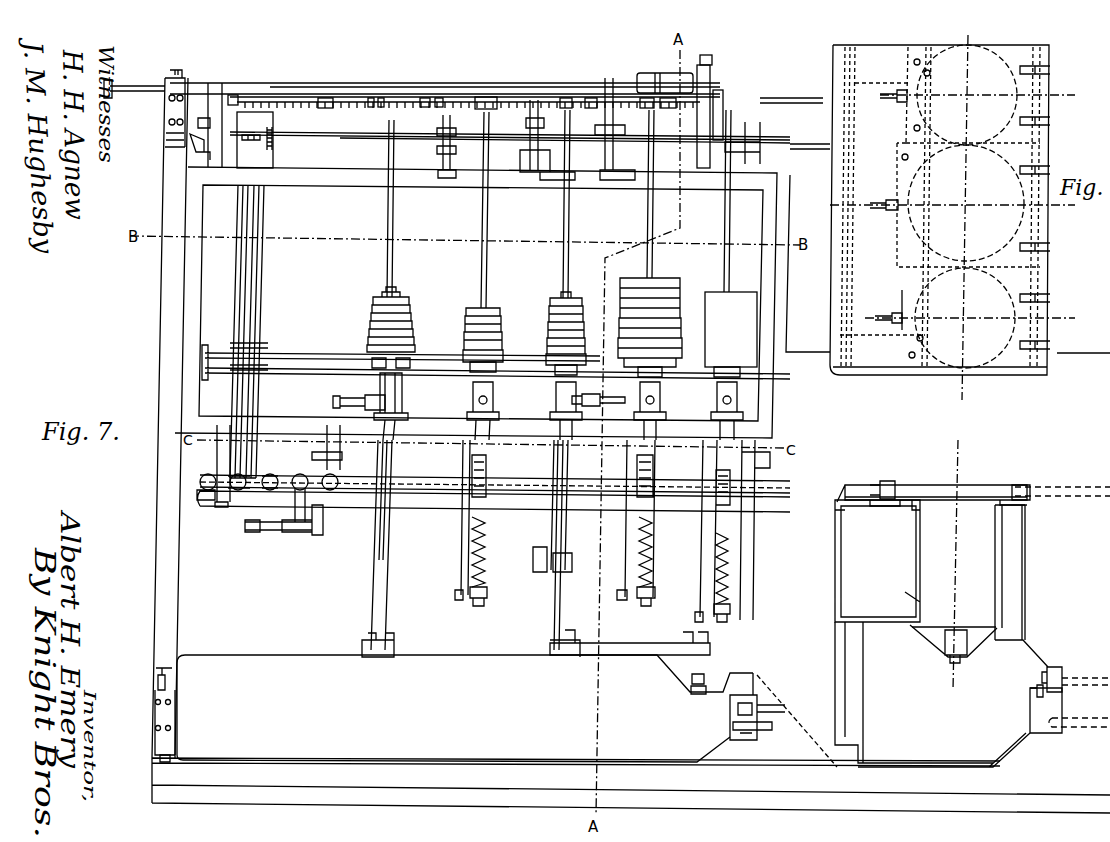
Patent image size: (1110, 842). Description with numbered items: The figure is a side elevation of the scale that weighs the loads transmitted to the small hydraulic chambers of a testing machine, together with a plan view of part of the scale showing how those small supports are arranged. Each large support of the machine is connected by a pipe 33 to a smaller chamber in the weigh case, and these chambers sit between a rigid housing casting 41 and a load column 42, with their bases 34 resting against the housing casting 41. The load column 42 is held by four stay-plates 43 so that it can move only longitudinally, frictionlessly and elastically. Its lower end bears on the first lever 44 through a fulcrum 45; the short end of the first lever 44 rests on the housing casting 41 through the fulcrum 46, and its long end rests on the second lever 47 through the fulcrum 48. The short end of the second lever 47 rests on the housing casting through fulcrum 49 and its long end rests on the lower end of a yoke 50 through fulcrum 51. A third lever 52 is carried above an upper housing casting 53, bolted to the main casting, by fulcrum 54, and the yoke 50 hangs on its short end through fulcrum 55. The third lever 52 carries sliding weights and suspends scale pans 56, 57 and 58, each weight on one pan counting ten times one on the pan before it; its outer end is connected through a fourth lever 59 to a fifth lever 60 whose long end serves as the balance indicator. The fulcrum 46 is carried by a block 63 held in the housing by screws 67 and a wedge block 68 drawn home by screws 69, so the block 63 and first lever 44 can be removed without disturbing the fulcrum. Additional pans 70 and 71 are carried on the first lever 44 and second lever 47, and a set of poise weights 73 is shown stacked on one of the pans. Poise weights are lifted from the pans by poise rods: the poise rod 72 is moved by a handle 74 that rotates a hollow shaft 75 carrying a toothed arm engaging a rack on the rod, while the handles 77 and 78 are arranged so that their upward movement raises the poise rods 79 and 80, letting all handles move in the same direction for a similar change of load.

In FIG. 7, the pipe 33 is at (880, 479).
In FIG. 8, the pipe 33 is at (890, 325).
In FIG. 7, the small support base 34 is at (920, 503).
In FIG. 8, the small support base 34 is at (900, 300).
In FIG. 7, the housing casting 41 is at (1030, 605).
In FIG. 8, the housing casting 41 is at (1050, 278).
In FIG. 7, the load column 42 is at (998, 586).
In FIG. 7, the stay-plates 43 is at (855, 508).
In FIG. 7, the first lever 44 is at (932, 694).
In FIG. 7, the fulcrum 45 is at (962, 661).
In FIG. 7, the fulcrum 46 is at (1043, 697).
In FIG. 7, the second lever 47 is at (498, 662).
In FIG. 7, the fulcrum 48 is at (700, 672).
In FIG. 7, the fulcrum 49 is at (765, 692).
In FIG. 7, the yoke 50 is at (178, 601).
In FIG. 7, the fulcrum 51 is at (172, 683).
In FIG. 7, the third lever 52 is at (362, 140).
In FIG. 7, the upper housing casting 53 is at (330, 188).
In FIG. 7, the fulcrum 54 is at (190, 142).
In FIG. 7, the fulcrum 55 is at (164, 136).
In FIG. 7, the scale pan 56 is at (508, 364).
In FIG. 7, the scale pan 57 is at (676, 375).
In FIG. 7, the scale pan 58 is at (758, 365).
In FIG. 7, the fourth lever 59 is at (750, 142).
In FIG. 7, the fifth lever 60 is at (605, 140).
In FIG. 7, the block 63 is at (1037, 733).
In FIG. 7, the screws 67 is at (1085, 730).
In FIG. 7, the wedge block 68 is at (1060, 665).
In FIG. 7, the screws 69 is at (1095, 660).
In FIG. 7, the scale pan 70 is at (600, 375).
In FIG. 7, the scale pan 71 is at (405, 365).
In FIG. 7, the poise rod 72 is at (494, 380).
In FIG. 7, the weight stack 73 is at (500, 325).
In FIG. 7, the handle 74 is at (300, 477).
In FIG. 7, the hollow shaft 75 is at (448, 510).
In FIG. 7, the handle 77 is at (338, 474).
In FIG. 7, the handle 78 is at (290, 494).
In FIG. 7, the poise rod 79 is at (590, 385).
In FIG. 7, the poise rod 80 is at (378, 383).